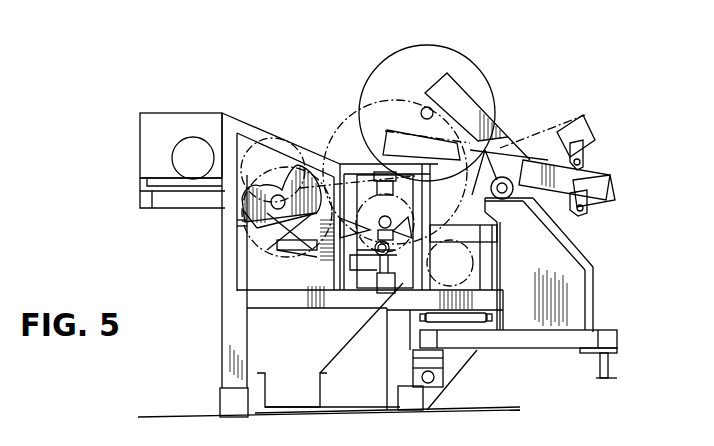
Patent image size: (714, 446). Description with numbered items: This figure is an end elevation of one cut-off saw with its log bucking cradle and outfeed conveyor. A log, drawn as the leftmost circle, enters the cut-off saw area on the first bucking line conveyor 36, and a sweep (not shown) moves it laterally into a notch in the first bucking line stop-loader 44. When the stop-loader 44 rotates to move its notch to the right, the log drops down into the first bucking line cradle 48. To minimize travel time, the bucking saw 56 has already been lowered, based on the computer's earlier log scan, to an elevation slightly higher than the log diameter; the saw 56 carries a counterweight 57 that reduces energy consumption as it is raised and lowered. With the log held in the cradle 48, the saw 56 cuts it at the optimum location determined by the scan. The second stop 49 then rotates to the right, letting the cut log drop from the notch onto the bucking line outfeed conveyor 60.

The first bucking line conveyor 36 is at (147, 182).
The first bucking line stop-loader 44 is at (263, 373).
The first bucking line cradle 48 is at (367, 232).
The second stop 49 is at (367, 232).
The bucking saw 56 is at (463, 57).
The counterweight 57 is at (617, 190).
The bucking line outfeed conveyor 60 is at (477, 296).